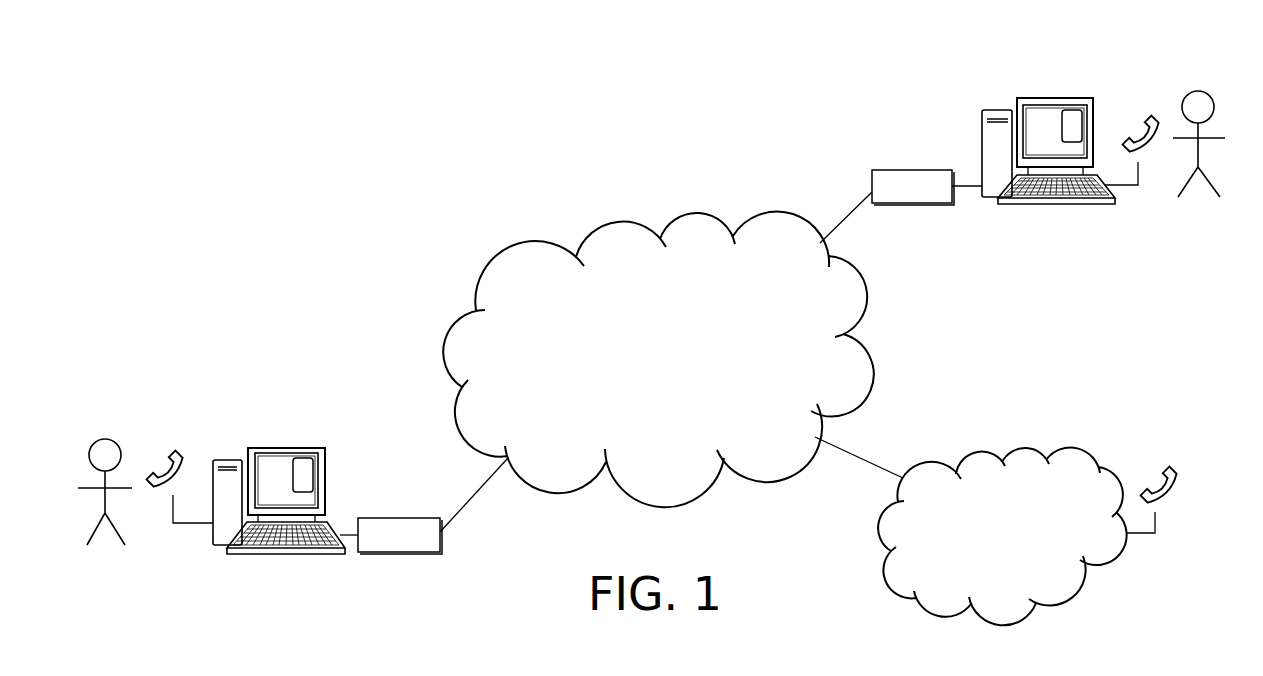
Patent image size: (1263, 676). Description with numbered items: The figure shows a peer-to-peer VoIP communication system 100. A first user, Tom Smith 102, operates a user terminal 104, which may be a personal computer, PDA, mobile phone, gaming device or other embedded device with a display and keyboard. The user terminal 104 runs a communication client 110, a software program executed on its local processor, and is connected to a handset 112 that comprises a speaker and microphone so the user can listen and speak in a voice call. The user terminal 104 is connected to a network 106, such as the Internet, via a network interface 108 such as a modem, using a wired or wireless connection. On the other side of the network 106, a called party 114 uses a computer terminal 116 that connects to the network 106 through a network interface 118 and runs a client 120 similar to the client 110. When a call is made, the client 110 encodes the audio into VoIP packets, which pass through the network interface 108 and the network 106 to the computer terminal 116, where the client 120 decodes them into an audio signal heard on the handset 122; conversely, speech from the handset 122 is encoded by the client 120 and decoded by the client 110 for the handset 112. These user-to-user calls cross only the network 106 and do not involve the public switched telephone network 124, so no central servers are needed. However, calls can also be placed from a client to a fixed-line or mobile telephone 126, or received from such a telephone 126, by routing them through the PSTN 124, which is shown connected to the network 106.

The P2P communication system 100 is at (440, 196).
The first user 102 is at (1200, 90).
The user terminal 104 is at (1029, 98).
The network 106 is at (876, 360).
The network interface 108 is at (912, 170).
The communication client 110 is at (1073, 110).
The handset 112 is at (1154, 117).
The called party 114 is at (105, 439).
The computer terminal 116 is at (258, 448).
The network interface 118 is at (398, 518).
The client 120 is at (303, 458).
The handset 122 is at (157, 450).
The public switched telephone network 124 is at (1078, 447).
The fixed-line or mobile telephone 126 is at (1170, 465).